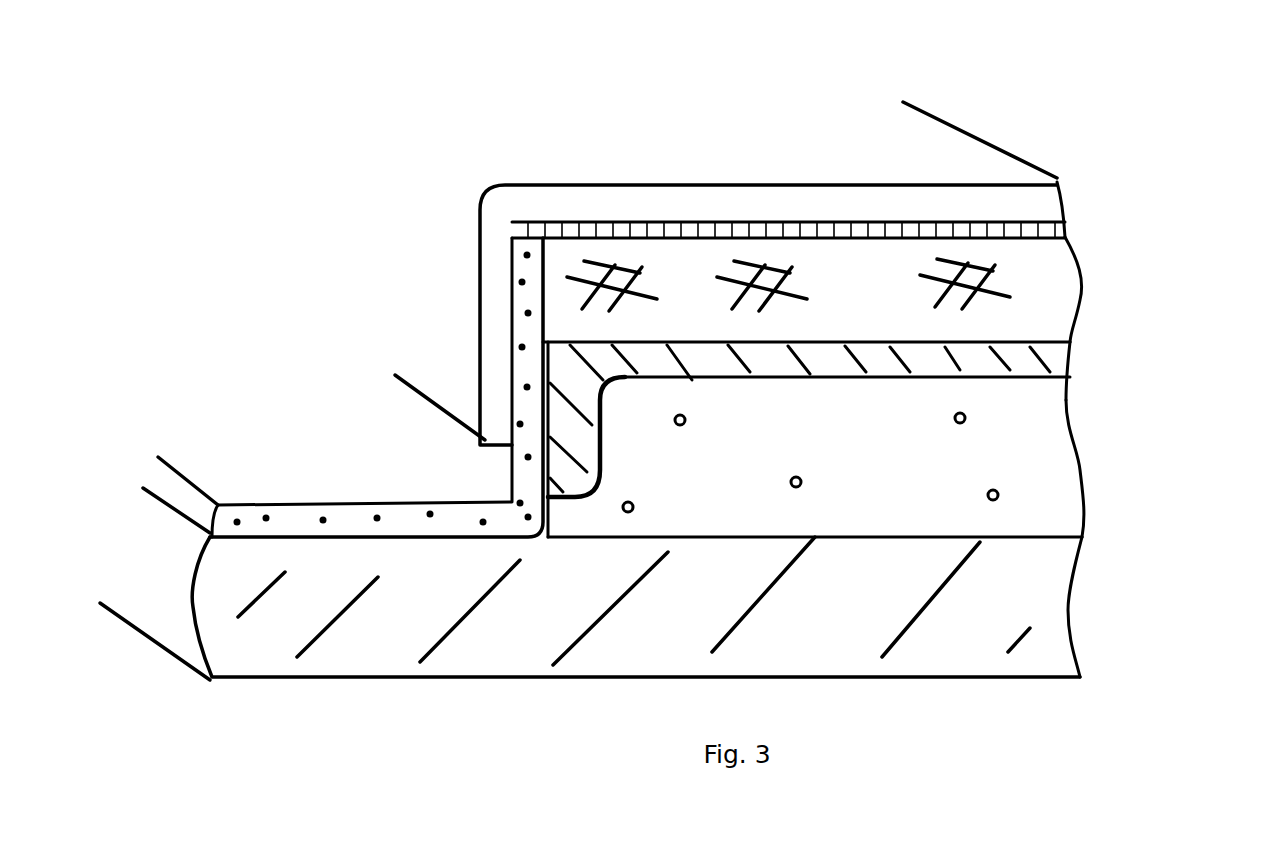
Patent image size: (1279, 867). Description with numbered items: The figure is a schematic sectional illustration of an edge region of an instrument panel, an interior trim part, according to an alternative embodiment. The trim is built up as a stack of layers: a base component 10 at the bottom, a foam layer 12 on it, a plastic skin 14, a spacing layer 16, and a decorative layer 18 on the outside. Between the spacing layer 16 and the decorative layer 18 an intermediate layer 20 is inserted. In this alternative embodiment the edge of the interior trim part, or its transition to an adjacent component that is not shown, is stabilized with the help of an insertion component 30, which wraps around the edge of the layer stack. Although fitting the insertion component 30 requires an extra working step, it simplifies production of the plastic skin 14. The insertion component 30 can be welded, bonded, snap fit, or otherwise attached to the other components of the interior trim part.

The base component 10 is at (1032, 570).
The foam layer 12 is at (1030, 449).
The plastic skin 14 is at (1057, 357).
The spacing layer 16 is at (1047, 288).
The decorative layer 18 is at (1028, 207).
The intermediate layer 20 is at (690, 230).
The insertion component 30 is at (350, 522).